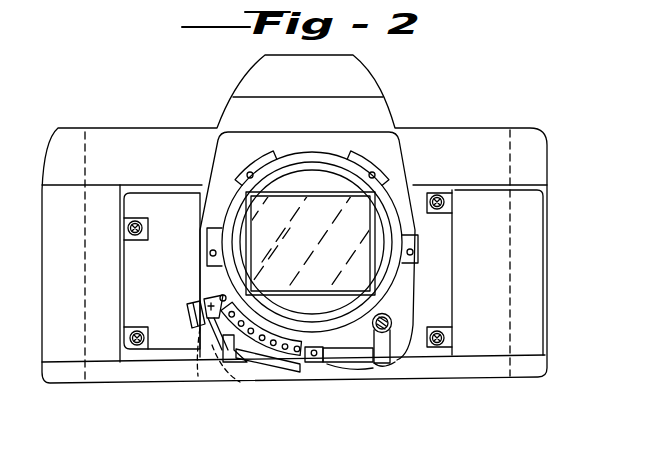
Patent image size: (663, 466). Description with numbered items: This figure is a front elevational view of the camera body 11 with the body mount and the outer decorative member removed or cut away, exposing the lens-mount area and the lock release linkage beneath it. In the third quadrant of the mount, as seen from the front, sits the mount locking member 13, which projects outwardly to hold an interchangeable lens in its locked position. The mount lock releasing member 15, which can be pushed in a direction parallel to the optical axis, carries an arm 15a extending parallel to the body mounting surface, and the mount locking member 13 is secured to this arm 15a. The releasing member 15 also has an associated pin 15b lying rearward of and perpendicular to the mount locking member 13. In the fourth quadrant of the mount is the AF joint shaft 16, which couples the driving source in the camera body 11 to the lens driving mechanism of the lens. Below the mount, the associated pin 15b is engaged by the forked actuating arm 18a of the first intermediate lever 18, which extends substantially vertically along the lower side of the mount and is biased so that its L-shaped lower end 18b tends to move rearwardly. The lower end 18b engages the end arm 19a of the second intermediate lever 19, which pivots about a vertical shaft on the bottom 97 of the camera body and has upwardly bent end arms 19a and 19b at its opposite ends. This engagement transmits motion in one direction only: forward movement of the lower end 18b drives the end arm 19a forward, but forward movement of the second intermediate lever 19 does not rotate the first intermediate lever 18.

The camera body 11 is at (530, 268).
The mount locking member 13 is at (219, 294).
The mount lock releasing member 15 is at (188, 313).
The arm 15a is at (205, 300).
The associated pin 15b is at (199, 378).
The AF joint shaft 16 is at (392, 320).
The first intermediate lever 18 is at (272, 358).
The forked actuating arm 18a is at (234, 360).
The lower end 18b is at (293, 368).
The second intermediate lever 19 is at (383, 365).
The end arm 19a is at (347, 364).
The end arm 19b is at (398, 364).
The bottom 97 is at (342, 374).